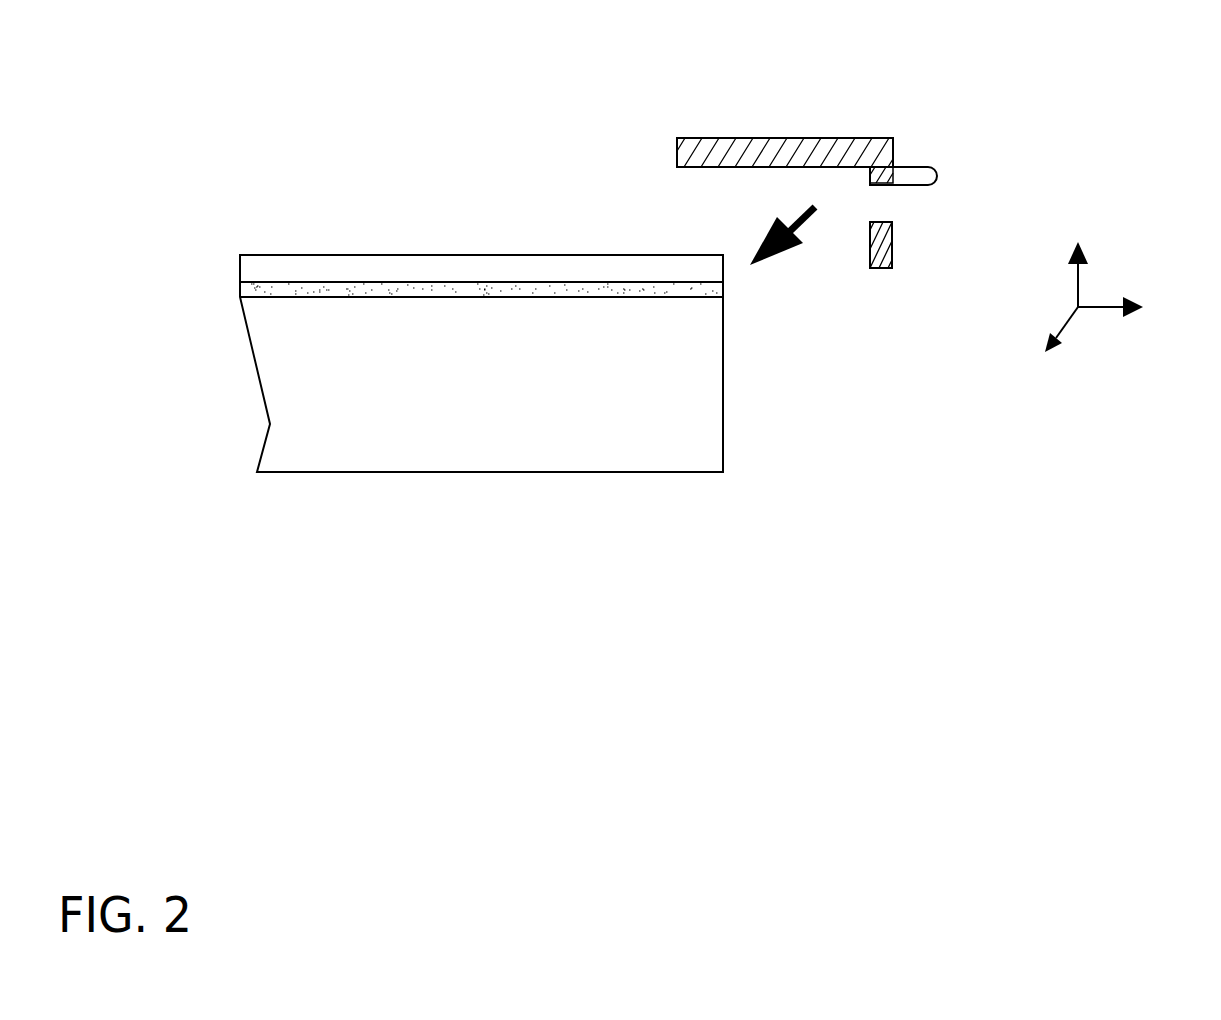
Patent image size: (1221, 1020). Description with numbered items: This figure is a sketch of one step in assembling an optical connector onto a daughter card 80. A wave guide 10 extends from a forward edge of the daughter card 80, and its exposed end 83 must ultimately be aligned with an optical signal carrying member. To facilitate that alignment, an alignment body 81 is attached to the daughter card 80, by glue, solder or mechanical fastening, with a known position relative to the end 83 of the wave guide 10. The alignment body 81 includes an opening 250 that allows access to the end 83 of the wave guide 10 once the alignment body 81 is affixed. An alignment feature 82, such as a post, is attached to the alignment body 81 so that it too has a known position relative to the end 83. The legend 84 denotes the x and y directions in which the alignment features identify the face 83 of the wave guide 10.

The wave guide 10 is at (240, 297).
The daughter card 80 is at (516, 325).
The alignment body 81 is at (830, 90).
The alignment feature 82 is at (933, 165).
The end of wave guide 83 is at (723, 285).
The legend 84 is at (1112, 355).
The opening 250 is at (905, 208).